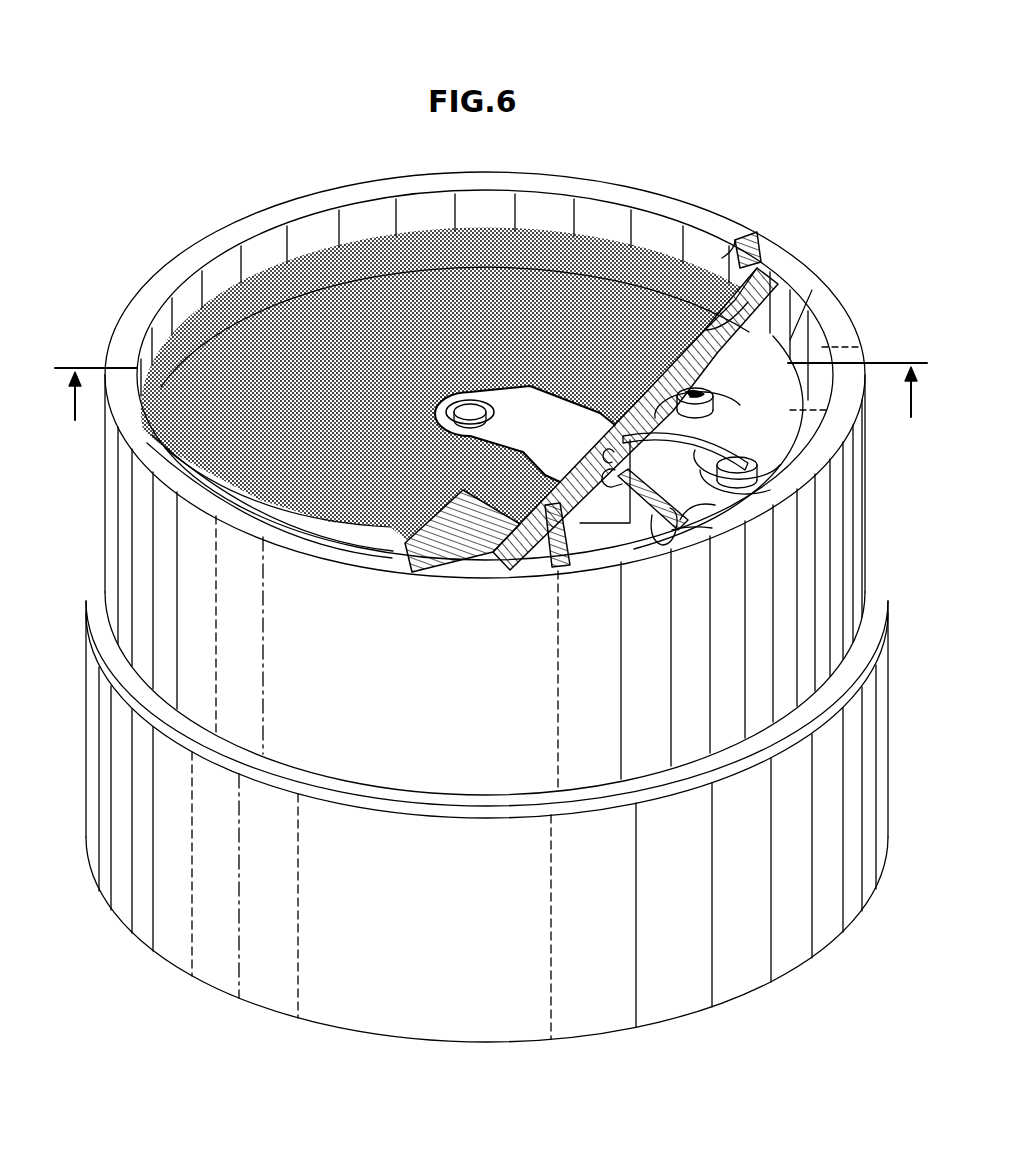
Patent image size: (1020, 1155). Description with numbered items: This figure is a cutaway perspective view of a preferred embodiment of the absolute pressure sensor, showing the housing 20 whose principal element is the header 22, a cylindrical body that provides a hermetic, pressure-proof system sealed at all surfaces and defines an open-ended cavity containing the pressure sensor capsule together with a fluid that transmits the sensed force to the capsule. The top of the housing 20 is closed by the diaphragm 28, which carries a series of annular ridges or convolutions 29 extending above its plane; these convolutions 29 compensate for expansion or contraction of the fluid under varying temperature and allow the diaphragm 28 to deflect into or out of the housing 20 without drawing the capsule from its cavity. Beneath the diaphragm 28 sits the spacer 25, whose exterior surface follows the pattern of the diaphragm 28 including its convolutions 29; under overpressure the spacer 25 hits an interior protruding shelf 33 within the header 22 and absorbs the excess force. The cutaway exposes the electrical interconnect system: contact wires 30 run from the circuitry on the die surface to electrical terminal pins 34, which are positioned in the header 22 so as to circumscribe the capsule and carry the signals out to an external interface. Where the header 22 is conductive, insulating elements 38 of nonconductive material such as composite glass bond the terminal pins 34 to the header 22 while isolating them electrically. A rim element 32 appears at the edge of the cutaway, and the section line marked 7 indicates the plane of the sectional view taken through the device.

The housing 20 is at (815, 266).
The header 22 is at (171, 937).
The spacer 25 is at (768, 266).
The diaphragm 28 is at (435, 350).
The convolutions 29 is at (326, 250).
The contact wires 30 is at (635, 476).
The rim lip 32 is at (741, 236).
The interior protruding shelf 33 is at (785, 358).
The electrical terminal pins 34 is at (717, 441).
The insulating elements 38 is at (650, 538).
The section line 7- 7 is at (491, 409).